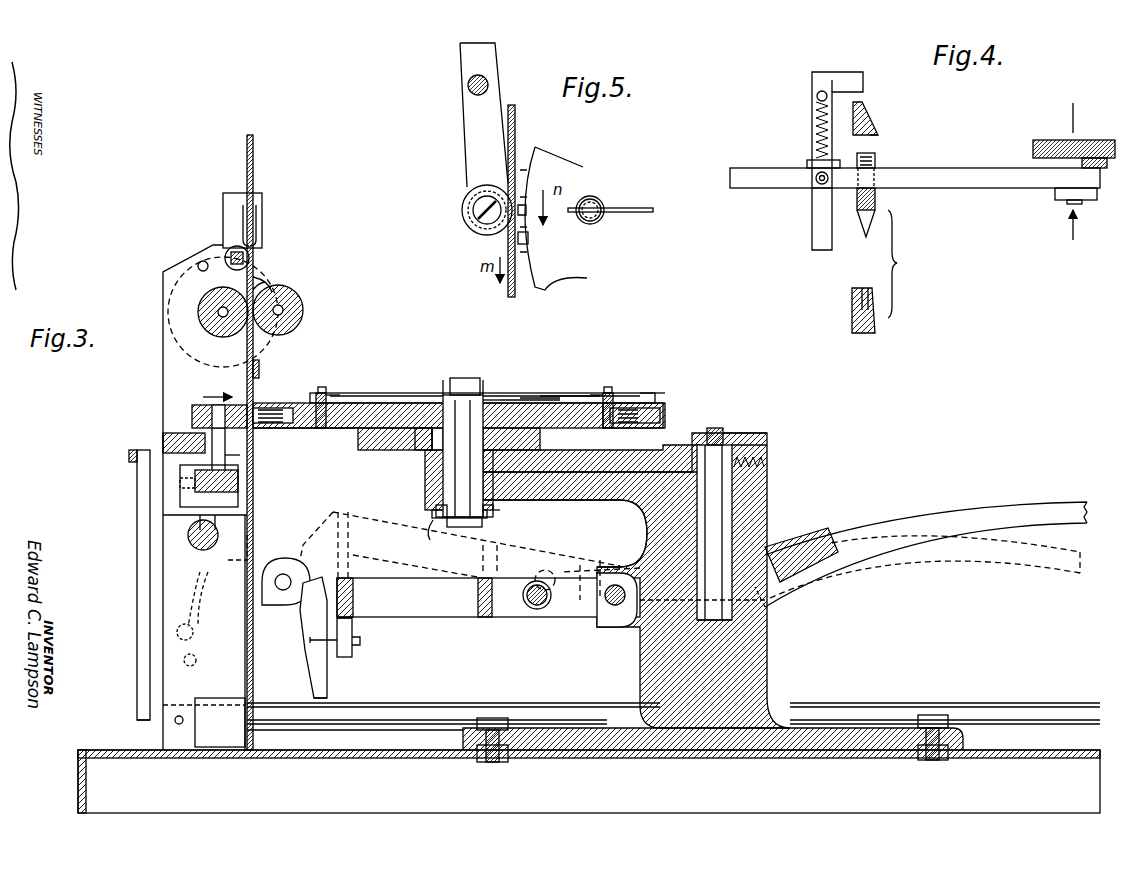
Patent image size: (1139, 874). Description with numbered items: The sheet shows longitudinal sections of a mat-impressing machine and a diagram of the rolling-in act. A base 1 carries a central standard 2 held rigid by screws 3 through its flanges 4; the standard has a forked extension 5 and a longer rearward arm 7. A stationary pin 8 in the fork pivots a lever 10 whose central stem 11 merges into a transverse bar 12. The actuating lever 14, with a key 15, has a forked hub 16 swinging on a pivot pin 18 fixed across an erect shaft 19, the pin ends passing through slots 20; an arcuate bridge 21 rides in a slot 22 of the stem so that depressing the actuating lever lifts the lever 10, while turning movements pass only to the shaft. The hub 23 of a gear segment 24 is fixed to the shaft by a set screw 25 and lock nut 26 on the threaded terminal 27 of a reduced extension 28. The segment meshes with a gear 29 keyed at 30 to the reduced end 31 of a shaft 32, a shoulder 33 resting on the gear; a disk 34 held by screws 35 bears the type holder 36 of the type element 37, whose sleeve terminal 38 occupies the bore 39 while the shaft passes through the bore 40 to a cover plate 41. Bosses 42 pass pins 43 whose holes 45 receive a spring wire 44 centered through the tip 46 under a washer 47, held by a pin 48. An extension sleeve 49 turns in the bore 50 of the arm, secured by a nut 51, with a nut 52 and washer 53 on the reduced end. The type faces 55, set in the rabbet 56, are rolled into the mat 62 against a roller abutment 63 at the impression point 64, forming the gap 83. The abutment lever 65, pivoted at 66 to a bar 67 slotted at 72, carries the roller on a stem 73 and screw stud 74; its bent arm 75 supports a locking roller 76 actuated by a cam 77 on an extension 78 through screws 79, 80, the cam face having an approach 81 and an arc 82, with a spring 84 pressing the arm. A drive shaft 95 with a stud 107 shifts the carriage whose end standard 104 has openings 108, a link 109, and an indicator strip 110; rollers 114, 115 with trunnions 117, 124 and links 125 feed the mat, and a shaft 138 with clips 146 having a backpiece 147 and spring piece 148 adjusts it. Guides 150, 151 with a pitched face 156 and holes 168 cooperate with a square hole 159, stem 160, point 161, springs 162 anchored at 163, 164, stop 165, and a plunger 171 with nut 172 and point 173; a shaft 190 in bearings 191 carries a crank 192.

In FIG. 3, the base 1 is at (365, 757).
In FIG. 3, the standard 2 is at (767, 655).
In FIG. 3, the screws 3 is at (490, 718).
In FIG. 3, the standard flanges 4 is at (862, 748).
In FIG. 3, the forked extension 5 is at (613, 628).
In FIG. 3, the arm 7 is at (575, 500).
In FIG. 3, the pin 8 is at (605, 613).
In FIG. 3, the lever 10 is at (443, 619).
In FIG. 3, the central stem 11 is at (487, 618).
In FIG. 3, the transverse bar 12 is at (355, 597).
In FIG. 3, the actuating lever 14 is at (958, 504).
In FIG. 4, the actuating lever 14 is at (970, 168).
In FIG. 4, the key 15 is at (1045, 140).
In FIG. 3, the hub 16 is at (767, 621).
In FIG. 3, the pivot pin 18 is at (775, 606).
In FIG. 3, the shaft 19 is at (727, 492).
In FIG. 3, the slots 20 is at (790, 603).
In FIG. 3, the arcuate bridge 21 is at (540, 609).
In FIG. 3, the slot 22 is at (530, 605).
In FIG. 3, the hub 23 is at (760, 447).
In FIG. 3, the gear segment 24 is at (650, 452).
In FIG. 3, the set screw 25 is at (762, 461).
In FIG. 3, the lock nut 26 is at (735, 435).
In FIG. 3, the threaded terminal 27 is at (713, 430).
In FIG. 3, the reduced extension 28 is at (755, 437).
In FIG. 3, the gear 29 is at (432, 455).
In FIG. 3, the key 30 is at (425, 480).
In FIG. 3, the reduced end 31 is at (432, 492).
In FIG. 3, the shaft 32 is at (500, 400).
In FIG. 3, the shoulder 33 is at (530, 382).
In FIG. 3, the disk 34 is at (372, 450).
In FIG. 3, the screws 35 is at (425, 468).
In FIG. 3, the type holder 36 is at (340, 430).
In FIG. 3, the type element 37 is at (390, 392).
In FIG. 5, the type element 37 is at (556, 164).
In FIG. 3, the sleeve terminal 38 is at (570, 383).
In FIG. 3, the bore 39 is at (430, 400).
In FIG. 3, the bore 40 is at (540, 374).
In FIG. 3, the cover plate 41 is at (652, 384).
In FIG. 5, the cover plate 41 is at (566, 176).
In FIG. 3, the bosses 42 is at (315, 393).
In FIG. 5, the bosses 42 is at (590, 196).
In FIG. 3, the pins 43 is at (468, 378).
In FIG. 5, the pins 43 is at (590, 224).
In FIG. 5, the spring wire 44 is at (612, 197).
In FIG. 3, the holes 45 is at (598, 393).
In FIG. 5, the holes 45 is at (602, 201).
In FIG. 3, the tip 46 is at (462, 378).
In FIG. 3, the washer 47 is at (442, 390).
In FIG. 3, the pin 48 is at (476, 378).
In FIG. 3, the extension sleeve 49 is at (493, 508).
In FIG. 3, the bore 50 is at (518, 512).
In FIG. 3, the nut 51 is at (440, 505).
In FIG. 3, the nut 52 is at (480, 520).
In FIG. 3, the washer 53 is at (441, 531).
In FIG. 3, the type faces 55 is at (262, 402).
In FIG. 5, the type faces 55 is at (530, 238).
In FIG. 3, the circumferential rabbet 56 is at (633, 425).
In FIG. 3, the mat 62 is at (254, 165).
In FIG. 5, the mat 62 is at (516, 135).
In FIG. 5, the roller abutment 63 is at (464, 200).
In FIG. 5, the impression point 64 is at (526, 210).
In FIG. 3, the abutment lever 65 is at (198, 494).
In FIG. 5, the abutment lever 65 is at (463, 58).
In FIG. 5, the pivot 66 is at (468, 86).
In FIG. 3, the bar 67 is at (163, 441).
In FIG. 3, the slot 72 is at (198, 453).
In FIG. 3, the stem 73 is at (240, 456).
In FIG. 3, the screw stud 74 is at (213, 415).
In FIG. 5, the screw stud 74 is at (487, 196).
In FIG. 3, the bent arm 75 is at (250, 535).
In FIG. 3, the locking roller 76 is at (284, 558).
In FIG. 3, the cam 77 is at (328, 672).
In FIG. 3, the extension 78 is at (352, 653).
In FIG. 3, the screw 79 is at (360, 642).
In FIG. 3, the screw 80 is at (355, 622).
In FIG. 3, the approach 81 is at (328, 579).
In FIG. 3, the arc 82 is at (308, 660).
In FIG. 5, the gap 83 is at (506, 212).
In FIG. 3, the spring 84 is at (196, 602).
In FIG. 3, the shaft 95 is at (192, 540).
In FIG. 3, the end standard 104 is at (163, 362).
In FIG. 3, the stud 107 is at (198, 517).
In FIG. 3, the openings 108 is at (172, 432).
In FIG. 3, the link 109 is at (133, 480).
In FIG. 3, the strip 110 is at (258, 372).
In FIG. 3, the back roller 114 is at (198, 310).
In FIG. 3, the front roller 115 is at (284, 294).
In FIG. 3, the trunnion 117 is at (215, 312).
In FIG. 3, the trunnions 124 is at (300, 306).
In FIG. 3, the links 125 is at (203, 261).
In FIG. 3, the shaft 138 is at (228, 251).
In FIG. 3, the clips 146 is at (232, 194).
In FIG. 3, the backpiece 147 is at (242, 216).
In FIG. 3, the front spring piece 148 is at (262, 216).
In FIG. 4, the upper guide 150 is at (876, 121).
In FIG. 4, the lower guide 151 is at (852, 323).
In FIG. 4, the front face 156 is at (880, 127).
In FIG. 4, the square hole 159 is at (815, 179).
In FIG. 4, the stem 160 is at (812, 238).
In FIG. 4, the angled point 161 is at (863, 82).
In FIG. 4, the springs 162 is at (815, 130).
In FIG. 4, the anchorage 163 is at (810, 194).
In FIG. 4, the anchorage 164 is at (817, 96).
In FIG. 4, the stop 165 is at (807, 164).
In FIG. 4, the holes 168 is at (852, 300).
In FIG. 4, the plunger 171 is at (878, 200).
In FIG. 4, the nut 172 is at (877, 163).
In FIG. 4, the point 173 is at (861, 230).
In FIG. 3, the shaft 190 is at (878, 705).
In FIG. 3, the bearings 191 is at (220, 702).
In FIG. 3, the crank 192 is at (137, 617).